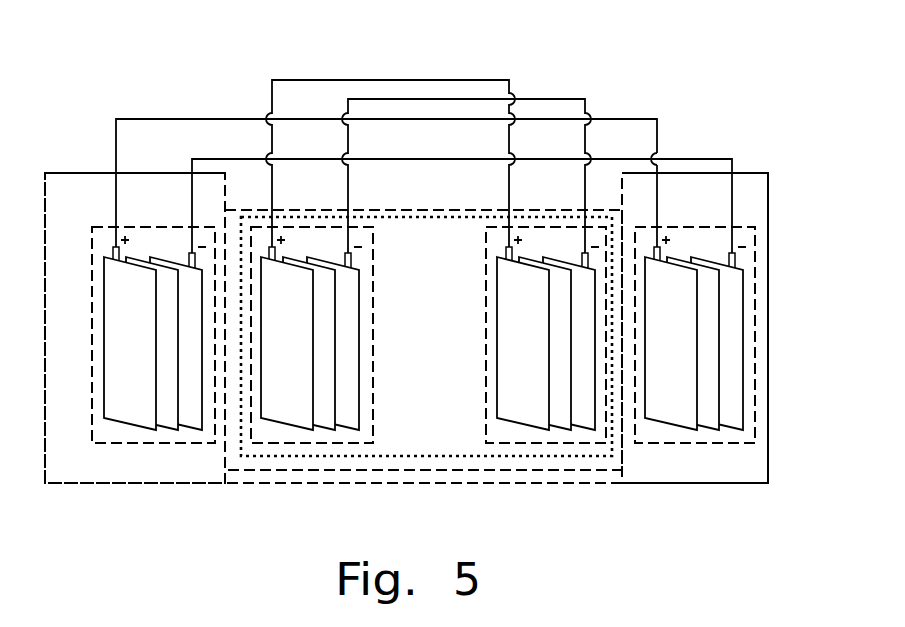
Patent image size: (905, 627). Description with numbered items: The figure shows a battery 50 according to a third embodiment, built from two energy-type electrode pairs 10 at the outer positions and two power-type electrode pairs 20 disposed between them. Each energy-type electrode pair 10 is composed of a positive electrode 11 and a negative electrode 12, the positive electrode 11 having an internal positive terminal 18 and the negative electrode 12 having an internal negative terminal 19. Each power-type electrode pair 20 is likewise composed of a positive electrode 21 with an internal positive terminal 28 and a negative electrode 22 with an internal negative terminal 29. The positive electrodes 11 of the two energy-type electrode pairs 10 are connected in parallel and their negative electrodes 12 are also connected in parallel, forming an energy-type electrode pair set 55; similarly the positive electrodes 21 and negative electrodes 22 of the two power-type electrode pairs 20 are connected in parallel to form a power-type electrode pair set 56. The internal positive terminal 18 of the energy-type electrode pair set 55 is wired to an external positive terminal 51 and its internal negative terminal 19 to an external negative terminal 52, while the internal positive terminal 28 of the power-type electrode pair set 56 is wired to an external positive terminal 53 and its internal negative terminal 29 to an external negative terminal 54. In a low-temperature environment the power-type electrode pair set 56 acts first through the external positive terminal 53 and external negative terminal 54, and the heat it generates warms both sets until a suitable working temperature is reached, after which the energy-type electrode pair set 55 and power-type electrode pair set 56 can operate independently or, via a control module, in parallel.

The battery 50 is at (120, 39).
The external positive terminal 51 is at (209, 119).
The external negative terminal 52 is at (732, 159).
The external positive terminal 53 is at (396, 80).
The external negative terminal 54 is at (571, 99).
The energy-type electrode pair set 55 is at (745, 484).
The power-type electrode pair set 56 is at (412, 217).
The energy-type electrode pair 10 is at (92, 312).
The positive electrode 11 is at (122, 425).
The negative electrode 12 is at (730, 428).
The internal positive terminal 18 is at (94, 243).
The internal negative terminal 19 is at (191, 253).
The power-type electrode pair 20 is at (373, 313).
The positive electrode 21 is at (280, 427).
The negative electrode 22 is at (347, 428).
The internal positive terminal 28 is at (270, 250).
The internal negative terminal 29 is at (347, 255).